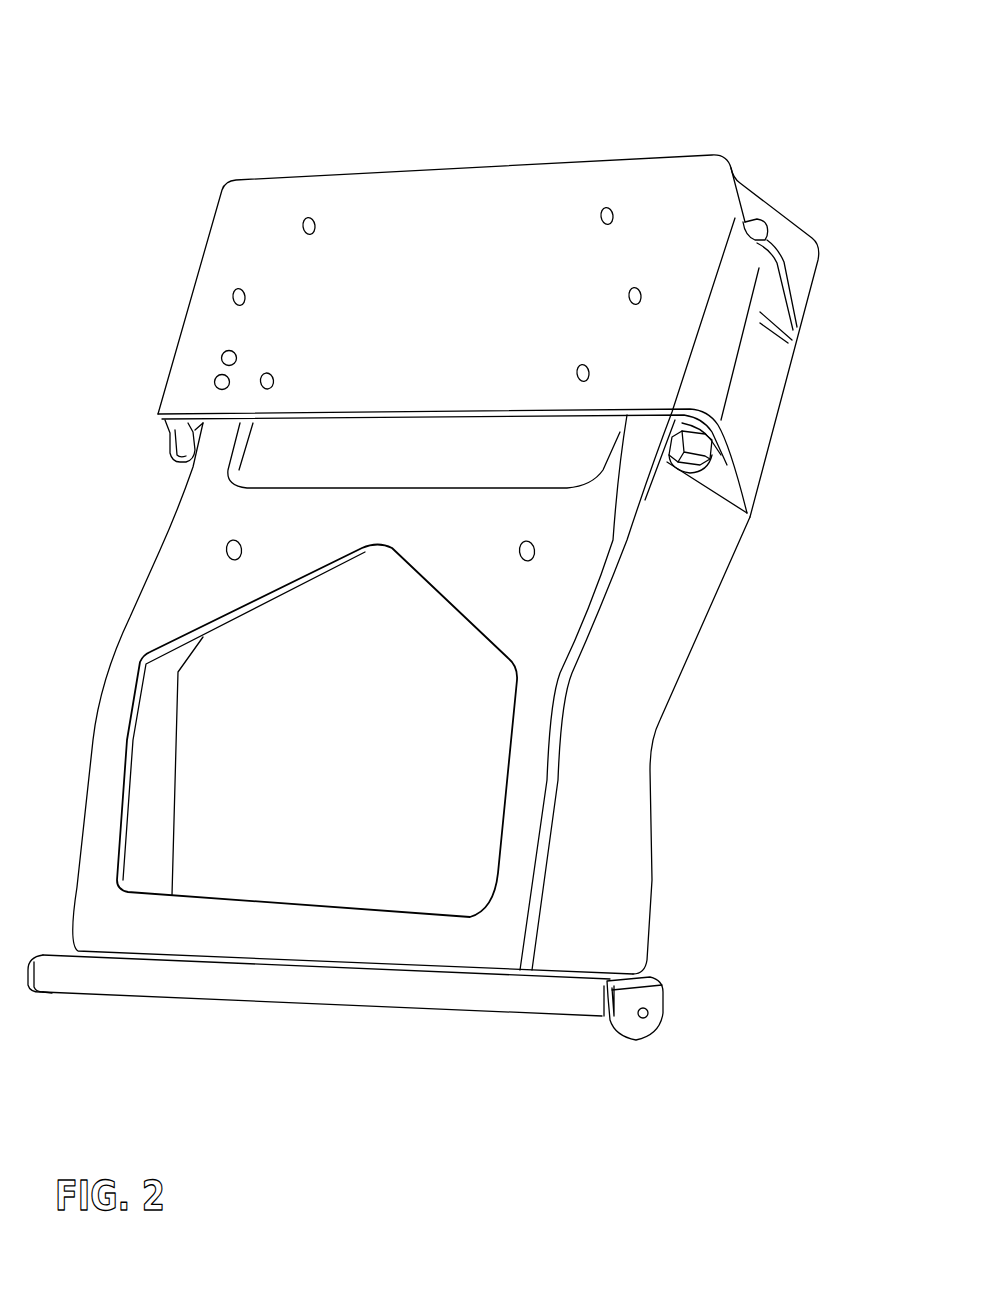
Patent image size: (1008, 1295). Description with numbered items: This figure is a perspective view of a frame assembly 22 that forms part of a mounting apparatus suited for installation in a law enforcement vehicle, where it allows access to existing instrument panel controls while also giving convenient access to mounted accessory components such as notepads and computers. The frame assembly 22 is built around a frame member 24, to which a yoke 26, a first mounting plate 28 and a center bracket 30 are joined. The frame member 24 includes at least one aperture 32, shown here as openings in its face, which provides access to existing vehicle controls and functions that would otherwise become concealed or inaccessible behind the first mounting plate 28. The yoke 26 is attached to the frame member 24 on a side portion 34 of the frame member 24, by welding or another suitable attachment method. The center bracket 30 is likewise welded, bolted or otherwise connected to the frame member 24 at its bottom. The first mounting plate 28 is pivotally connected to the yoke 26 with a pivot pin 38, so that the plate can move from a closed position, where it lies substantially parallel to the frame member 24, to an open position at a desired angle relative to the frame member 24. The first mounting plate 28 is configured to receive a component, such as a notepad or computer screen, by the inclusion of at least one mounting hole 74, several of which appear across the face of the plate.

The frame assembly 22 is at (214, 136).
The frame member 24 is at (172, 510).
The yoke 26 is at (777, 427).
The first mounting plate 28 is at (450, 372).
The center bracket 30 is at (260, 985).
The aperture 32 is at (363, 467).
The side portion 34 is at (700, 590).
The pivot pin 38 is at (817, 257).
The mounting hole 74 is at (630, 294).